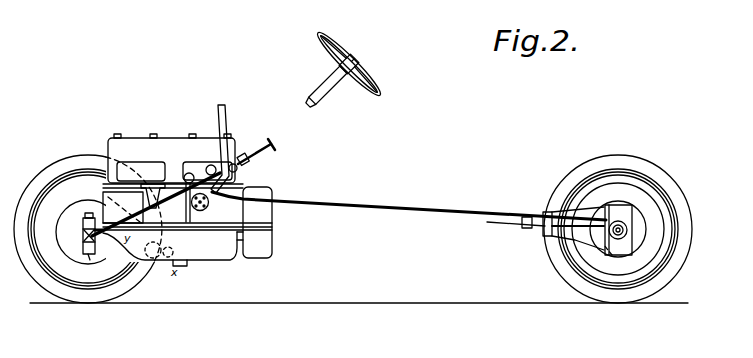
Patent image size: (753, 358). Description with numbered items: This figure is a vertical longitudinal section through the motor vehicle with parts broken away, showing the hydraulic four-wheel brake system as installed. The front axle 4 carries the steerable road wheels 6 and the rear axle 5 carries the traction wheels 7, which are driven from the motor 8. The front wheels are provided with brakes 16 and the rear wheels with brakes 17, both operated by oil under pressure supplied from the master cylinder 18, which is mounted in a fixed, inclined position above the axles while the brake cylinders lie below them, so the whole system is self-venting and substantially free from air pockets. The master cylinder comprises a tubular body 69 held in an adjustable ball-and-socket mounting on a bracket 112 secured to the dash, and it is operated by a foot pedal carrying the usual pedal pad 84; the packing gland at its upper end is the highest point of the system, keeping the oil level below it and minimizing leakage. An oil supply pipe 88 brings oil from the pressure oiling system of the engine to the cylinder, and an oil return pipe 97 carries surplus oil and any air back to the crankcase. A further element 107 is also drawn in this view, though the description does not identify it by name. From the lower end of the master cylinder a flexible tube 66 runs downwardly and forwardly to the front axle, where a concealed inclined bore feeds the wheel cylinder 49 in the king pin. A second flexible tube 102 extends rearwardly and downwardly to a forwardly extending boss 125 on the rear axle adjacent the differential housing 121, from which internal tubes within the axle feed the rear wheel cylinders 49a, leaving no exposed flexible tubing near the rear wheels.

The front axle 4 is at (80, 233).
The rear axle 5 is at (628, 236).
The steerable road wheels 6 is at (142, 293).
The traction wheels 7 is at (677, 200).
The motor 8 is at (170, 148).
The front wheel brakes 16 is at (98, 257).
The rear wheel brakes 17 is at (647, 223).
The master cylinder 18 is at (207, 172).
The cylinder 49 is at (90, 260).
The rear wheel cylinders 49a is at (612, 255).
The flexible tube 66 is at (206, 238).
The tubular body 69 is at (238, 168).
The pedal pad 84 is at (274, 149).
The oil supply pipe 88 is at (185, 174).
The oil return pipe 97 is at (262, 213).
The flexible tube 102 is at (421, 210).
The sprocket 107 is at (205, 209).
The bracket 112 is at (226, 114).
The differential housing 121 is at (628, 250).
The forwardly extending boss 125 is at (620, 222).